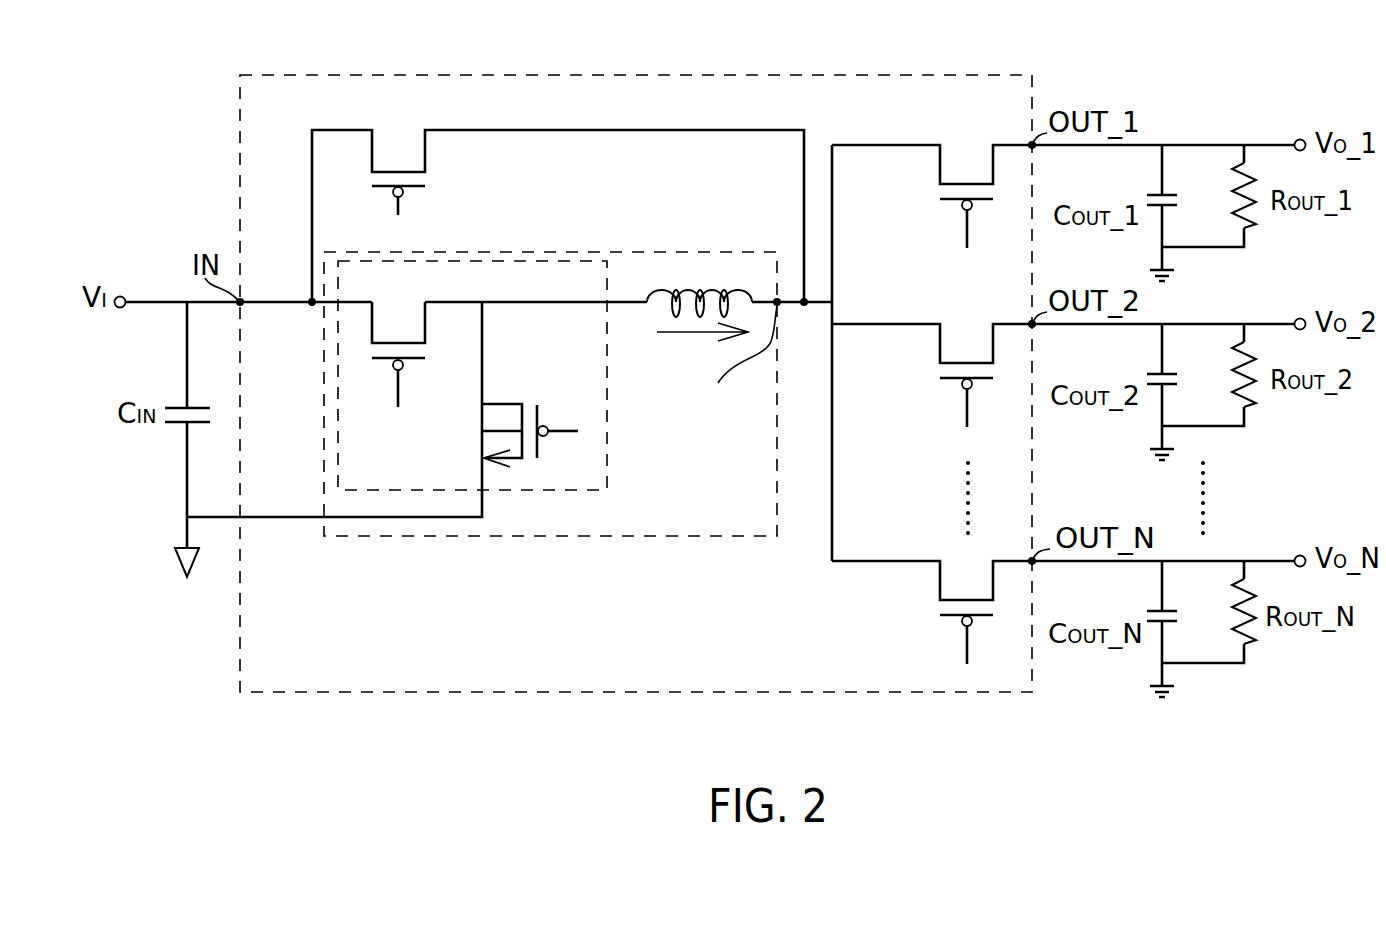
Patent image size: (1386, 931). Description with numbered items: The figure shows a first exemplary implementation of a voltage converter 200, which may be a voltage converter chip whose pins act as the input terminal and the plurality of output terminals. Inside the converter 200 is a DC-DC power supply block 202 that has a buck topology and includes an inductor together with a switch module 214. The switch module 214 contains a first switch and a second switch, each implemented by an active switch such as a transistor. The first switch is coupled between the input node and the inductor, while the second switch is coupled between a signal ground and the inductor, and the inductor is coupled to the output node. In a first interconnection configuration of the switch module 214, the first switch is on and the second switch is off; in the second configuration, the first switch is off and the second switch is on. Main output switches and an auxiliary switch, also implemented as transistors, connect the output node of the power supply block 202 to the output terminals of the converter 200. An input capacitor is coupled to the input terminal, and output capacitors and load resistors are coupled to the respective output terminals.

The voltage converter 200 is at (550, 75).
The DC-DC power supply block 202 is at (552, 252).
The switch module 214 is at (470, 261).